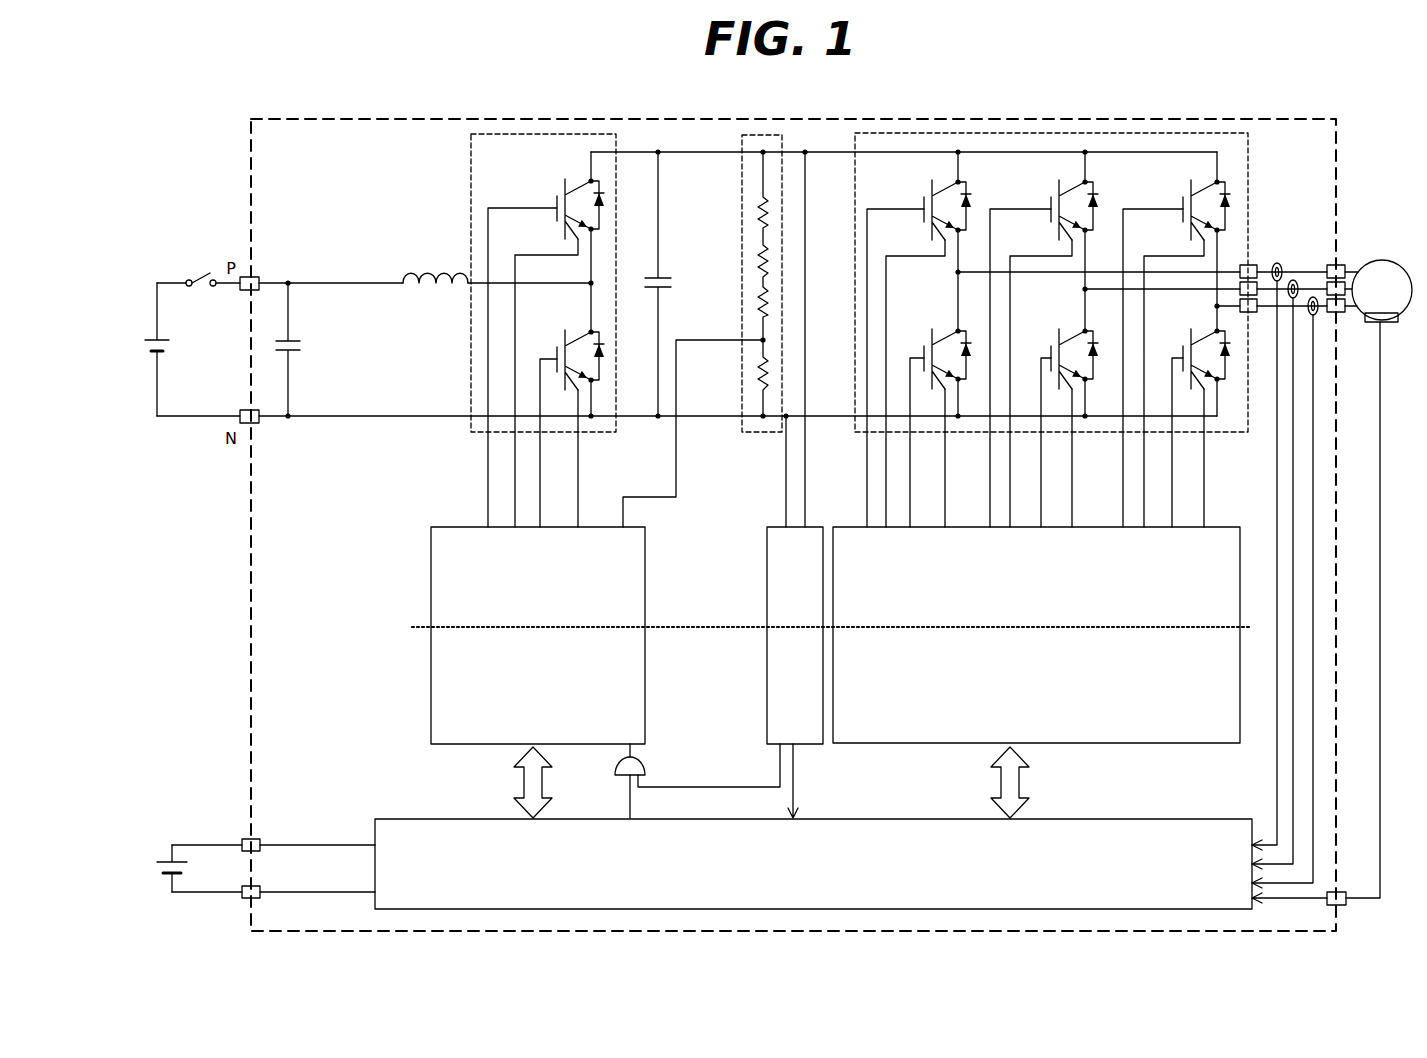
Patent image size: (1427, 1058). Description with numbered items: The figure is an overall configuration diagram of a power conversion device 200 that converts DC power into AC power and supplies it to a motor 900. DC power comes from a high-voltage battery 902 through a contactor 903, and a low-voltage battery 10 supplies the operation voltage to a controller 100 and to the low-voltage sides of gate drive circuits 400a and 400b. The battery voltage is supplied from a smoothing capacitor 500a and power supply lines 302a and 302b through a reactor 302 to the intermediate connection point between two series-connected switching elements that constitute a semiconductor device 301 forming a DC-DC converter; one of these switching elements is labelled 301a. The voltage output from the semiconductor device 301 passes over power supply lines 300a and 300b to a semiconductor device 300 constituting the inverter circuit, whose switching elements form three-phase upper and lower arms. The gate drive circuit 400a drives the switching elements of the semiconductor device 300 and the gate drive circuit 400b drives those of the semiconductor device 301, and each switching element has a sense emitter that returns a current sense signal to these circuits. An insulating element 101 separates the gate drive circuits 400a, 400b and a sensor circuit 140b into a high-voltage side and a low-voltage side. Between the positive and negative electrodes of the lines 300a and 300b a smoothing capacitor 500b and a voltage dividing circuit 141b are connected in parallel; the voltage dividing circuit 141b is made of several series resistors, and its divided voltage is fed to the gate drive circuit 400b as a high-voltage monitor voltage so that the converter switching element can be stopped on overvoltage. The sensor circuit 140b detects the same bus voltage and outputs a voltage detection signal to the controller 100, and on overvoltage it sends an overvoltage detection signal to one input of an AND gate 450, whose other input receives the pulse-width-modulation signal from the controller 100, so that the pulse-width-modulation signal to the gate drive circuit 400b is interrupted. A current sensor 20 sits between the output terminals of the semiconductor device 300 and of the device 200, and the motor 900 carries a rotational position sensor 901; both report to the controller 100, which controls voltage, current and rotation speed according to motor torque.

The low-voltage battery 10 is at (163, 861).
The current sensor 20 is at (1277, 264).
The controller 100 is at (375, 826).
The insulating element 101 is at (698, 634).
The sensor circuit 140b is at (767, 674).
The voltage dividing circuit 141b is at (772, 133).
The power conversion device 200 is at (1208, 120).
The semiconductor device 300 is at (1052, 133).
The power supply line 300a is at (816, 150).
The power supply line 300b is at (806, 414).
The semiconductor device 301 is at (603, 133).
The lower arm switching element 301a is at (552, 286).
The reactor 302 is at (436, 270).
The power supply line 302a is at (344, 282).
The power supply line 302b is at (358, 414).
The gate drive circuit 400a is at (1170, 743).
The gate drive circuit 400b is at (647, 590).
The AND gate 450 is at (615, 768).
The smoothing capacitor 500a is at (301, 339).
The smoothing capacitor 500b is at (665, 276).
The motor 900 is at (1385, 261).
The rotational position sensor 901 is at (1374, 324).
The high-voltage battery 902 is at (172, 350).
The contactor 903 is at (200, 270).